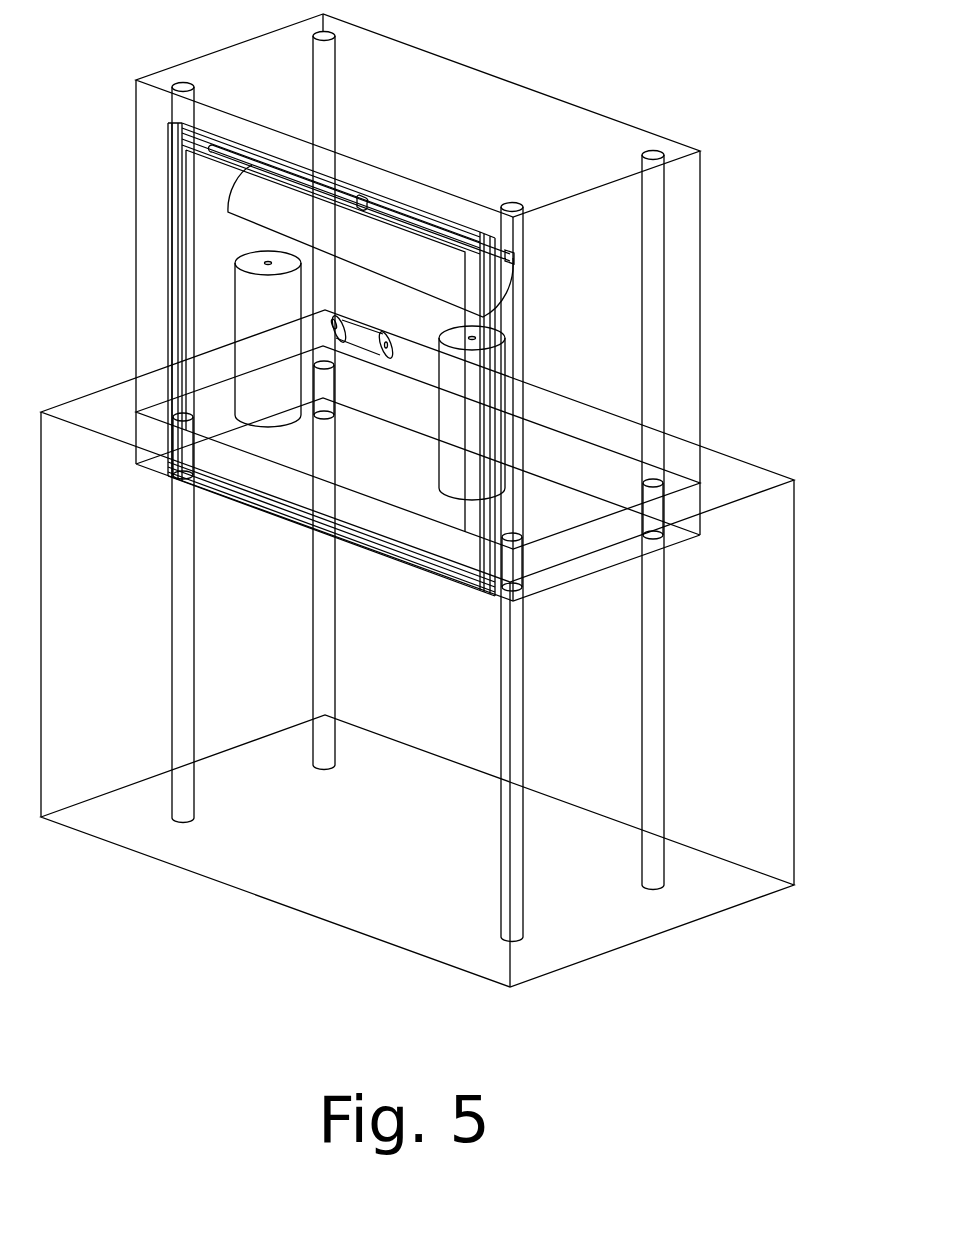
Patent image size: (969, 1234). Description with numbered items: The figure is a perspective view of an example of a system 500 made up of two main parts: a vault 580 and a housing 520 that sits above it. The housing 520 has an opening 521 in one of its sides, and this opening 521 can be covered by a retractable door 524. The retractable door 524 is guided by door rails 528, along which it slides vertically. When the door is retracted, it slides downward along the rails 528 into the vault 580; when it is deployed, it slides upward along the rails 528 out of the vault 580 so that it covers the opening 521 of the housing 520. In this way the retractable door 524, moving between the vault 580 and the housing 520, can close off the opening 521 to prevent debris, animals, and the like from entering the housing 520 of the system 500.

The system 500 is at (637, 35).
The housing 520 is at (700, 230).
The opening 521 is at (182, 173).
The retractable door 524 is at (201, 237).
The door rails 528 is at (263, 297).
The vault 580 is at (752, 463).